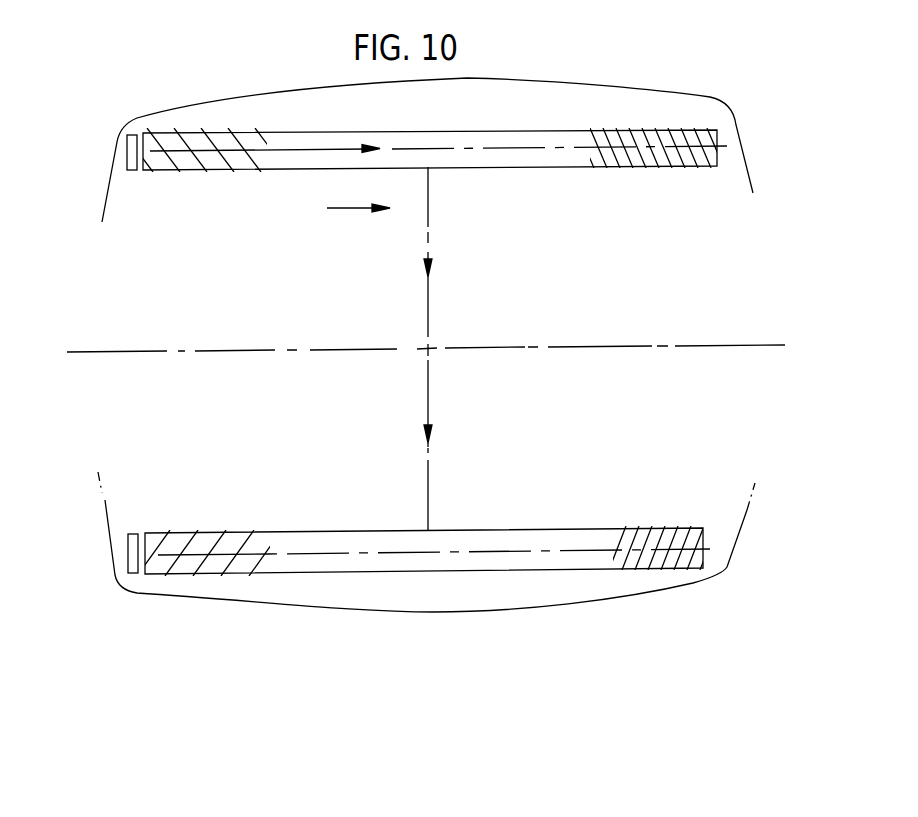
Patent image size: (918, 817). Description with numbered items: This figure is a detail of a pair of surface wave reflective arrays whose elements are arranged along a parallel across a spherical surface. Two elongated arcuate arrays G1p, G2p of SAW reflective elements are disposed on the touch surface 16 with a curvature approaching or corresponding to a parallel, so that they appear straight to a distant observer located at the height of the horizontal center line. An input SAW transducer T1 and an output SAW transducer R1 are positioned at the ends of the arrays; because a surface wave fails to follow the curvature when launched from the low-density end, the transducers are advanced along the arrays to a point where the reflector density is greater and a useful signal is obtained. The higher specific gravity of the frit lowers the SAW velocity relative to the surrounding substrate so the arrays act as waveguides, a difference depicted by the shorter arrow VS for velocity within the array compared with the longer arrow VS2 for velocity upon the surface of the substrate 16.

The touch surface 16 is at (708, 212).
The elongated arcuate array G1p is at (195, 131).
The elongated arcuate array G2p is at (257, 575).
The input SAW transducer T1 is at (125, 158).
The output SAW transducer R1 is at (127, 556).
The SAW velocity within the array VS is at (337, 147).
The SAW velocity upon the substrate surface VS2 is at (357, 211).